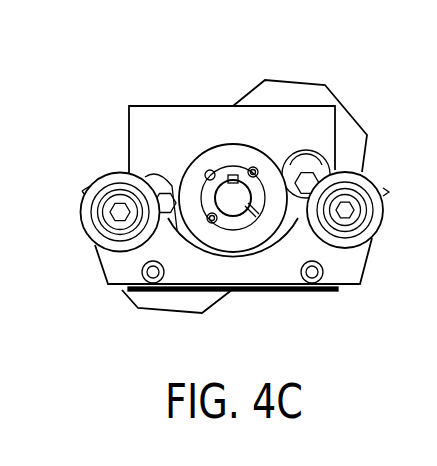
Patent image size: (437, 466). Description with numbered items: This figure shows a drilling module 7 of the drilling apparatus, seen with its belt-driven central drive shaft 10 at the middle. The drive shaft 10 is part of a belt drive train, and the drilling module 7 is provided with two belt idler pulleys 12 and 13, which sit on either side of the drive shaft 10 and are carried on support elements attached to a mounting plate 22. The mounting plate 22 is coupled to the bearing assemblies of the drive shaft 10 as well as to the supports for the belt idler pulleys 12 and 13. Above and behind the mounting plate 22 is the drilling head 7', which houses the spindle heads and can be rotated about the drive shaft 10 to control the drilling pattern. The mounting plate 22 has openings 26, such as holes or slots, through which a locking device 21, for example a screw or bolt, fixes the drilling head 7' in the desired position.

The drilling module 7 is at (222, 172).
The drilling head 7' is at (300, 102).
The mounting plate 22 is at (153, 118).
The belt idler pulley 12 is at (100, 188).
The belt idler pulley 13 is at (365, 188).
The central drive shaft 10 is at (240, 205).
The openings 26 is at (303, 150).
The locking device 21 is at (312, 180).